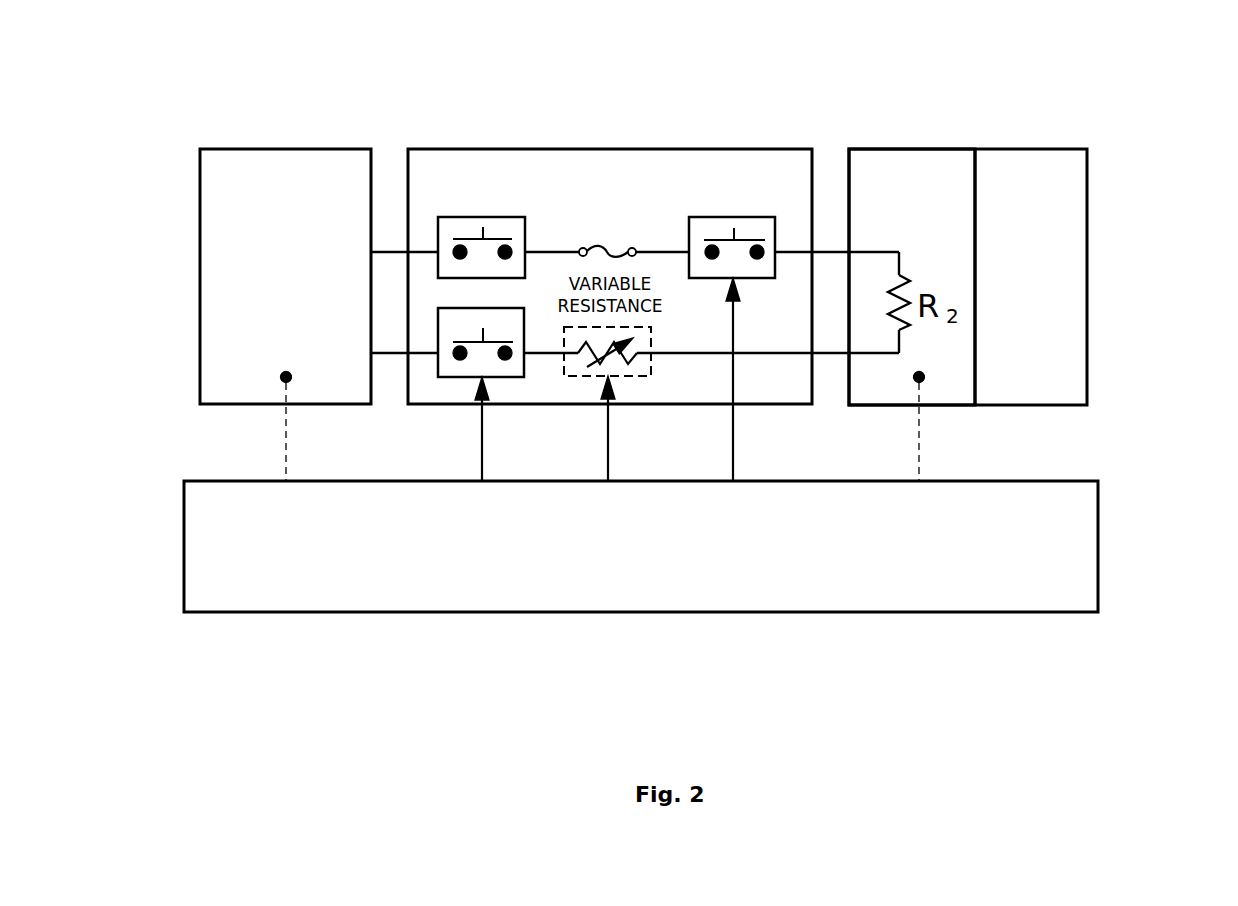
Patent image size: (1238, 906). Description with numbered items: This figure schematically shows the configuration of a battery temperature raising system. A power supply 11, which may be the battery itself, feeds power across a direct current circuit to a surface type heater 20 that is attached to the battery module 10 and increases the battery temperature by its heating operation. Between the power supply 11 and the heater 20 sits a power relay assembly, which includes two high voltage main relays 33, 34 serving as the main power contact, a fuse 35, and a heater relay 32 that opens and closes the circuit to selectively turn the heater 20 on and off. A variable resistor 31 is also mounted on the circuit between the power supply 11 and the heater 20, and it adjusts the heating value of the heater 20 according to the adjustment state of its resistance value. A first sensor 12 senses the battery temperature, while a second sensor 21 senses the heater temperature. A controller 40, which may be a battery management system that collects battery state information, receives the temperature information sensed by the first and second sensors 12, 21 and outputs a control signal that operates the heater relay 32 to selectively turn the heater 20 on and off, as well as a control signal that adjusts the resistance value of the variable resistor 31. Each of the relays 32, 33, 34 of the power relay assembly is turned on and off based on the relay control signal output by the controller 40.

The battery module 10 is at (1087, 197).
The power supply 11 is at (287, 149).
The first sensor 12 is at (286, 377).
The heater 20 is at (919, 377).
The second sensor 21 is at (874, 149).
The variable resistor 31 is at (566, 377).
The heater relay 32 is at (734, 216).
The high voltage main relay 33 is at (525, 225).
The high voltage main relay 34 is at (438, 363).
The fuse 35 is at (607, 250).
The controller 40 is at (710, 612).